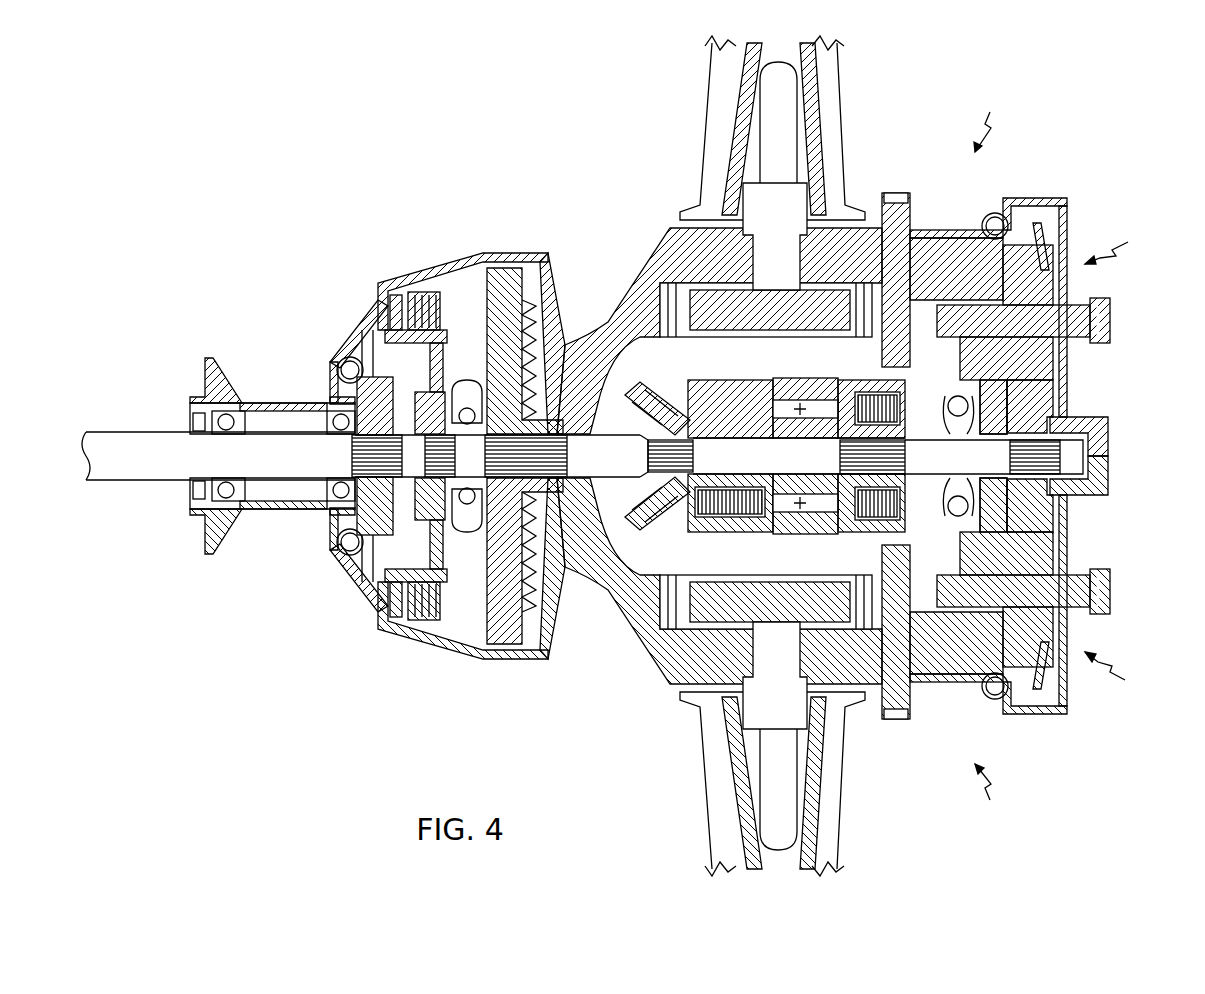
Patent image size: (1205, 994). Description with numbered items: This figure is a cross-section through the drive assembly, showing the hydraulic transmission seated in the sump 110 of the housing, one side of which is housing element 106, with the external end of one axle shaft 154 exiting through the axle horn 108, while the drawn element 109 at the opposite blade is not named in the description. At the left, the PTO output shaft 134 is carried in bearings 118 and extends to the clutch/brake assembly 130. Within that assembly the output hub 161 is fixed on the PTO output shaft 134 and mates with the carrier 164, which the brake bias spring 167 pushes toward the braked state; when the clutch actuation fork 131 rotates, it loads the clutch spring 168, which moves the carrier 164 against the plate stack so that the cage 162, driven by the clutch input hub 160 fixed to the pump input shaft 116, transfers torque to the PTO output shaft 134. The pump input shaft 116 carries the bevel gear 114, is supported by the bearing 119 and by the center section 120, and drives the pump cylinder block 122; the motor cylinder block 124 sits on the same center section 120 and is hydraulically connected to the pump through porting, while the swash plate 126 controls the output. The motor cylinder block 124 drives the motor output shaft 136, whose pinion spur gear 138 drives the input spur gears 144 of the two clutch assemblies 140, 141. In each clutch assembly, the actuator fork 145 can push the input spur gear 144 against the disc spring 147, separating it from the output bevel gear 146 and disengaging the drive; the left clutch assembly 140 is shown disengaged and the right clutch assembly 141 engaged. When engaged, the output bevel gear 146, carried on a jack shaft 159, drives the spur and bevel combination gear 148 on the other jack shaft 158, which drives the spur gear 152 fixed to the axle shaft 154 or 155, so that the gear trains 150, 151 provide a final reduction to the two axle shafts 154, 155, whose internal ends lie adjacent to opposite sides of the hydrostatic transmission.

The housing element 106 is at (520, 255).
The axle horn 108 is at (838, 790).
The upper blade 109 is at (838, 126).
The sump 110 is at (817, 567).
The bevel gear 114 is at (508, 308).
The pump input shaft 116 is at (566, 468).
The bearings 118 is at (226, 412).
The bearing 119 is at (468, 392).
The center section 120 is at (803, 386).
The pump cylinder block 122 is at (722, 396).
The motor cylinder block 124 is at (845, 390).
The swash plate 126 is at (648, 332).
The clutch/brake assembly 130 is at (455, 640).
The clutch actuation fork 131 is at (342, 362).
The PTO output shaft 134 is at (112, 468).
The motor output shaft 136 is at (954, 468).
The pinion spur gear 138 is at (1050, 492).
The clutch assembly 140 is at (1125, 675).
The clutch assembly 141 is at (1128, 246).
The input spur gear 144 is at (1034, 222).
The actuator fork 145 is at (990, 213).
The output bevel gear 146 is at (1040, 352).
The disc spring 147 is at (1063, 226).
The spur and bevel combination gear 148 is at (955, 242).
The gear train 150 is at (999, 796).
The gear train 151 is at (997, 120).
The spur gear 152 is at (705, 305).
The axle shaft 154 is at (759, 778).
The axle shaft 155 is at (760, 150).
The jack shaft 158 is at (895, 225).
The jack shaft 159 is at (1095, 322).
The clutch input hub 160 is at (442, 512).
The output hub 161 is at (365, 514).
The cage 162 is at (430, 292).
The carrier 164 is at (396, 298).
The brake bias spring 167 is at (366, 586).
The clutch spring 168 is at (378, 322).